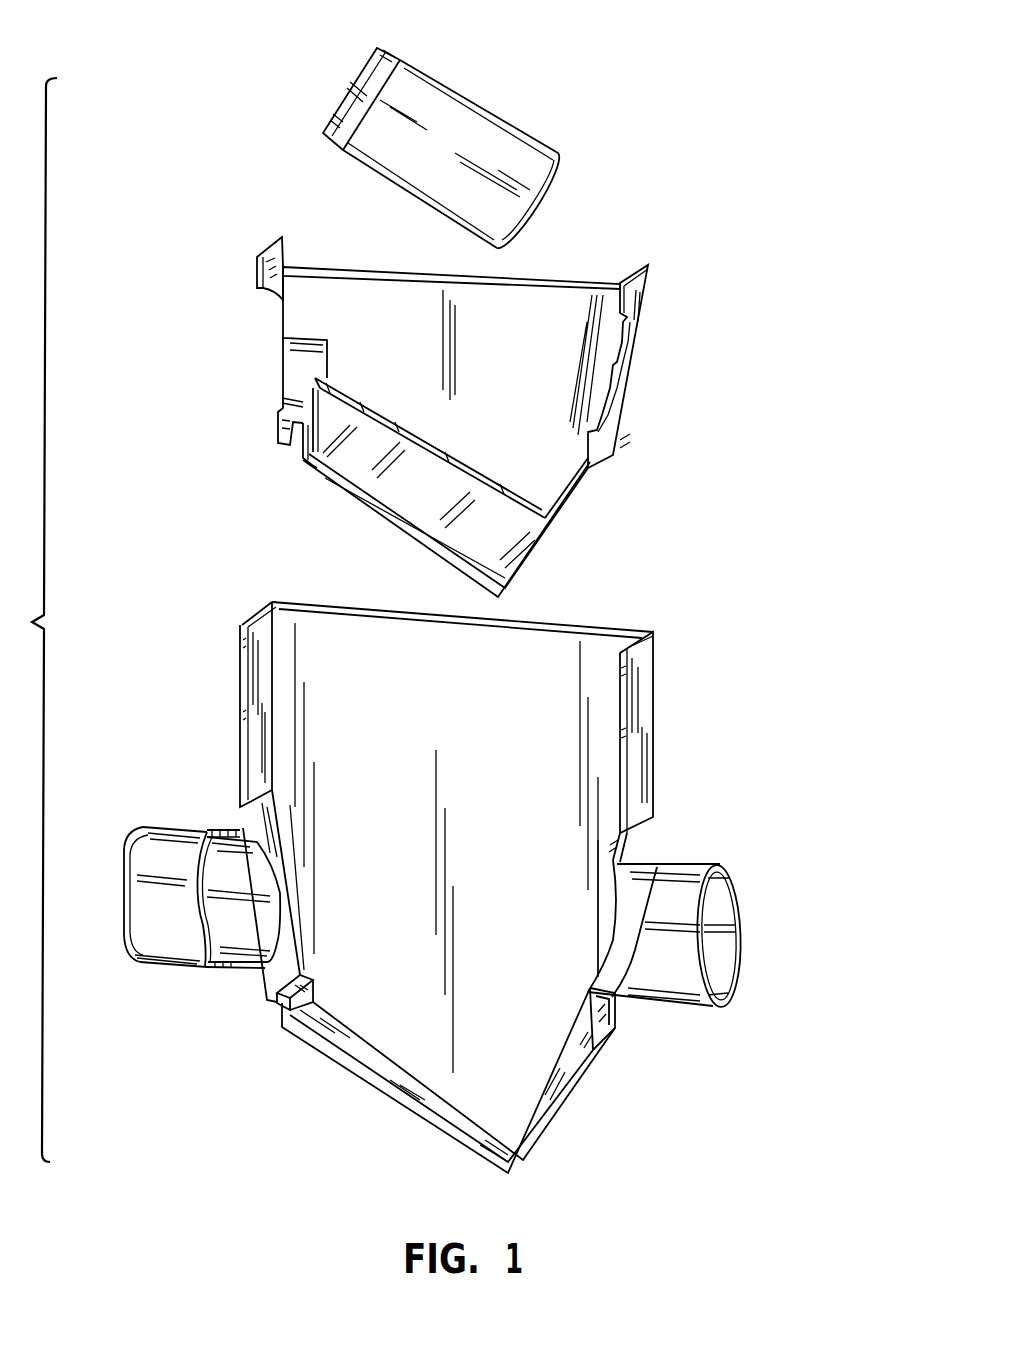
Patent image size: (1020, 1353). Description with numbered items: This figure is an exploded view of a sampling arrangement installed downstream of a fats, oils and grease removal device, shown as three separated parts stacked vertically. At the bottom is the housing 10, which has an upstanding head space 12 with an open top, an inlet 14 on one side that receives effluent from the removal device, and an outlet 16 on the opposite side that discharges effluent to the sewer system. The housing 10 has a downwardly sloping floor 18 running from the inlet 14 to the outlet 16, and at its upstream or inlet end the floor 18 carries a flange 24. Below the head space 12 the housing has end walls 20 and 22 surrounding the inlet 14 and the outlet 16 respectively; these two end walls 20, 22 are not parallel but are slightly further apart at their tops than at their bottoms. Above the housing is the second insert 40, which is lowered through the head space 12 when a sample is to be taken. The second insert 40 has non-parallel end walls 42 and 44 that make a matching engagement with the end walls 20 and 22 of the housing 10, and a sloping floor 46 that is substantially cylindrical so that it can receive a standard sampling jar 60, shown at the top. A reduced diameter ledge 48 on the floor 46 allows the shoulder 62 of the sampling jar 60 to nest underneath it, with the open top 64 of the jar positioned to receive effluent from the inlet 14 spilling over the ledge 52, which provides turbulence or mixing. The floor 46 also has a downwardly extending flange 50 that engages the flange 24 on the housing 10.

The housing 10 is at (660, 737).
The upstanding head space 12 is at (643, 657).
The inlet 14 is at (150, 825).
The outlet 16 is at (710, 868).
The downwardly sloping floor 18 is at (423, 1120).
The end wall 20 is at (243, 732).
The end wall 22 is at (612, 1020).
The flange 24 is at (277, 1002).
The second insert 40 is at (648, 383).
The end wall 42 is at (258, 270).
The end wall 44 is at (632, 312).
The sloping floor 46 is at (395, 495).
The reduced diameter ledge 48 is at (310, 465).
The downwardly extending flange 50 is at (282, 423).
The ledge 52 is at (315, 397).
The sampling jar 60 is at (533, 107).
The shoulder 62 is at (403, 63).
The open top 64 is at (358, 63).